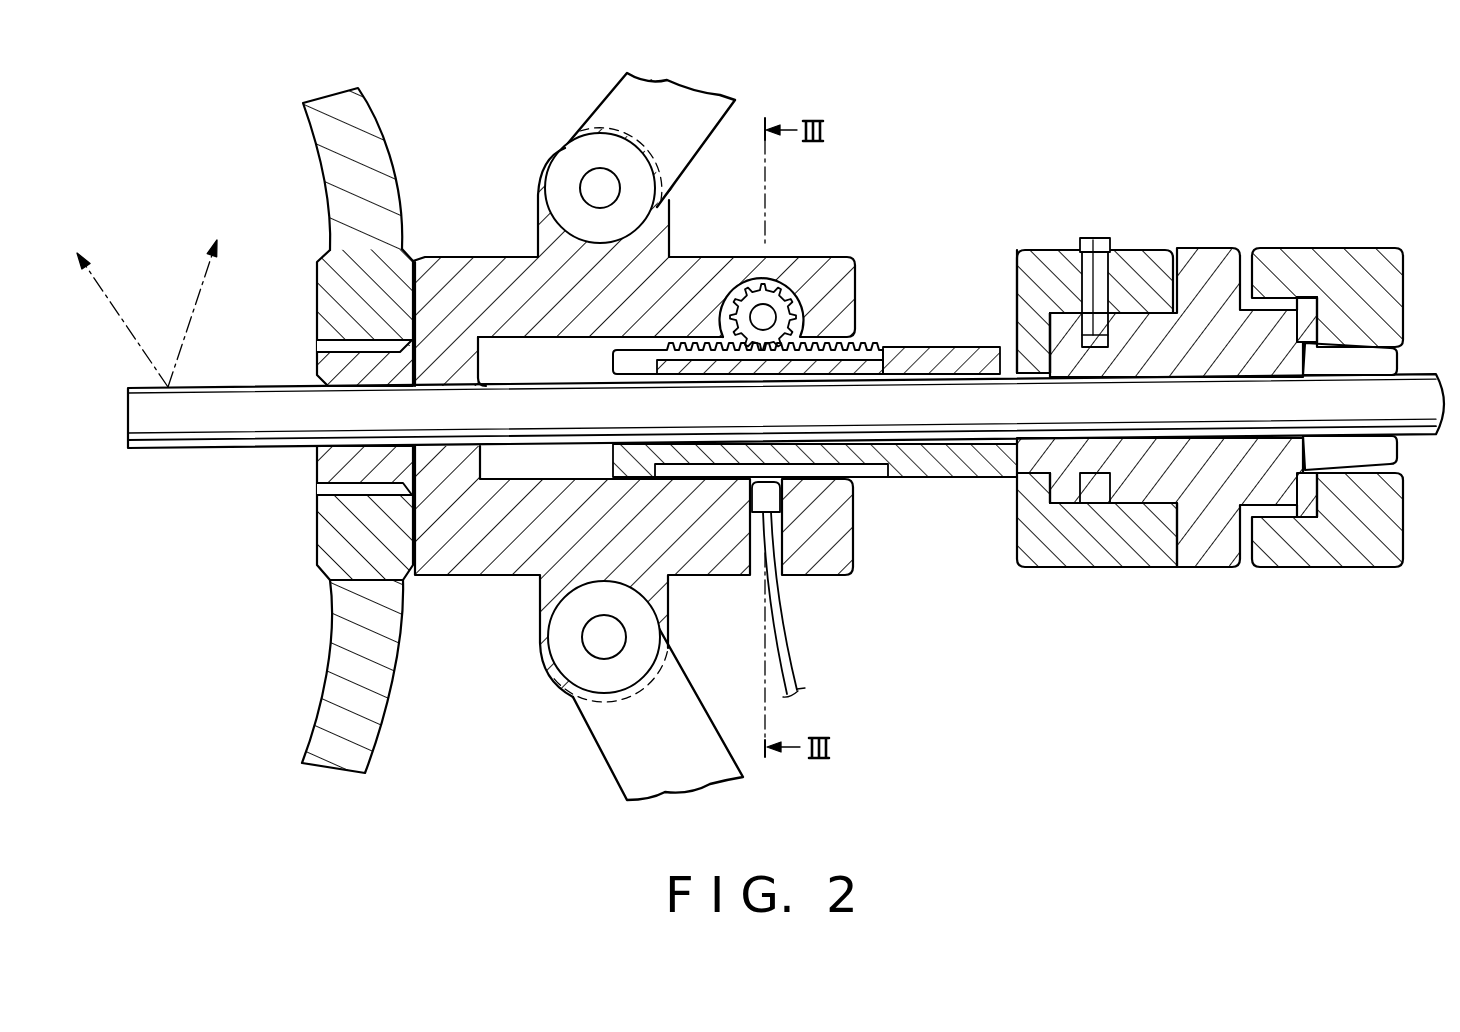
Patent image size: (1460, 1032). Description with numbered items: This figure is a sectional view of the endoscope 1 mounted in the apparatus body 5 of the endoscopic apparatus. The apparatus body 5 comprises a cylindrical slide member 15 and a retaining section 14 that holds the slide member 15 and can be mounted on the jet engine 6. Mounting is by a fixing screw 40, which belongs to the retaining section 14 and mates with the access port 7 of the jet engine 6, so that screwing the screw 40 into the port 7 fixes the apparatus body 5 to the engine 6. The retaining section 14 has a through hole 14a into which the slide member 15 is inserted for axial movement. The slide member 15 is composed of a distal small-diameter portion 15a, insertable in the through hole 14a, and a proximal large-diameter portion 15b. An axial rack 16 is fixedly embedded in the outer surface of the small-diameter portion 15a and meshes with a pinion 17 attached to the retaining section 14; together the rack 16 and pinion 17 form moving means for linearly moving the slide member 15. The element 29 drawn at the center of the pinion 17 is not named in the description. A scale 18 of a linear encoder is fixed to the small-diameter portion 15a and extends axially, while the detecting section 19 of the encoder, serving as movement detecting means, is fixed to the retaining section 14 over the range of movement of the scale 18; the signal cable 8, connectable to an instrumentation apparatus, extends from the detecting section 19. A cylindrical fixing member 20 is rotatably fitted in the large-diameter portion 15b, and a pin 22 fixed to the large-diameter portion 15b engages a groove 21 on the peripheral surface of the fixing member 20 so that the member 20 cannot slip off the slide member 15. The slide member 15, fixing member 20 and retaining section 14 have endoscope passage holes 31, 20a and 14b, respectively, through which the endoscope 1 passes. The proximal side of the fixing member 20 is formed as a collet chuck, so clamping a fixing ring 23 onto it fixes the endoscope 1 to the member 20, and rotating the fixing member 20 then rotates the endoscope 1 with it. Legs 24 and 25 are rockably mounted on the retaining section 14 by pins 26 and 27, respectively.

The endoscope 1 is at (987, 393).
The apparatus body 5 is at (951, 670).
The jet engine 6 is at (380, 704).
The access port 7 is at (338, 500).
The signal cable 8 is at (790, 661).
The retaining section 14 is at (632, 417).
The through hole 14a is at (547, 337).
The endoscope passage hole 14b is at (440, 386).
The slide member 15 is at (1078, 394).
The small-diameter portion 15a is at (940, 353).
The large-diameter portion 15b is at (1033, 248).
The axial rack 16 is at (872, 350).
The pinion 17 is at (759, 277).
The scale 18 is at (873, 478).
The detecting section 19 is at (773, 498).
The fixing member 20 is at (1167, 384).
The endoscope passage hole 20a is at (1276, 378).
The groove 21 is at (1100, 497).
The pin 22 is at (1103, 273).
The fixing ring 23 is at (1373, 258).
The leg 24 is at (642, 134).
The leg 25 is at (624, 694).
The pin 26 is at (613, 187).
The pin 27 is at (597, 647).
The gear shaft 29 is at (765, 313).
The endoscope passage hole 31 is at (968, 477).
The fixing screw 40 is at (340, 332).